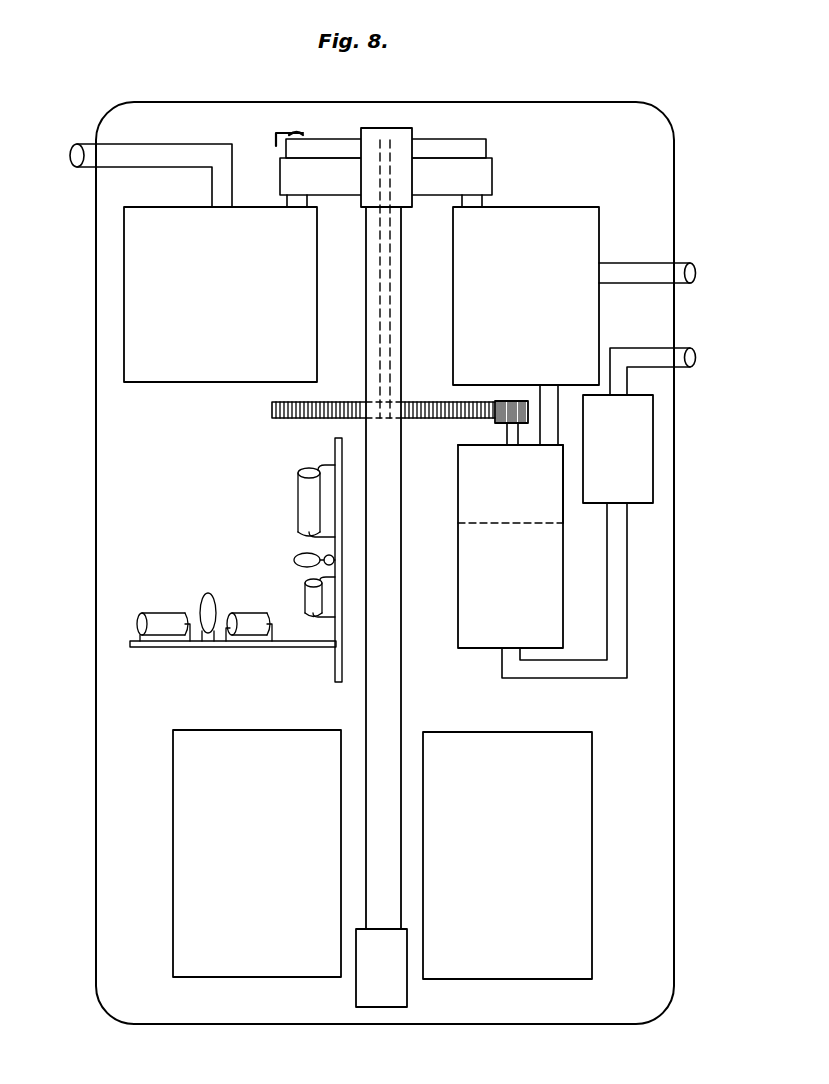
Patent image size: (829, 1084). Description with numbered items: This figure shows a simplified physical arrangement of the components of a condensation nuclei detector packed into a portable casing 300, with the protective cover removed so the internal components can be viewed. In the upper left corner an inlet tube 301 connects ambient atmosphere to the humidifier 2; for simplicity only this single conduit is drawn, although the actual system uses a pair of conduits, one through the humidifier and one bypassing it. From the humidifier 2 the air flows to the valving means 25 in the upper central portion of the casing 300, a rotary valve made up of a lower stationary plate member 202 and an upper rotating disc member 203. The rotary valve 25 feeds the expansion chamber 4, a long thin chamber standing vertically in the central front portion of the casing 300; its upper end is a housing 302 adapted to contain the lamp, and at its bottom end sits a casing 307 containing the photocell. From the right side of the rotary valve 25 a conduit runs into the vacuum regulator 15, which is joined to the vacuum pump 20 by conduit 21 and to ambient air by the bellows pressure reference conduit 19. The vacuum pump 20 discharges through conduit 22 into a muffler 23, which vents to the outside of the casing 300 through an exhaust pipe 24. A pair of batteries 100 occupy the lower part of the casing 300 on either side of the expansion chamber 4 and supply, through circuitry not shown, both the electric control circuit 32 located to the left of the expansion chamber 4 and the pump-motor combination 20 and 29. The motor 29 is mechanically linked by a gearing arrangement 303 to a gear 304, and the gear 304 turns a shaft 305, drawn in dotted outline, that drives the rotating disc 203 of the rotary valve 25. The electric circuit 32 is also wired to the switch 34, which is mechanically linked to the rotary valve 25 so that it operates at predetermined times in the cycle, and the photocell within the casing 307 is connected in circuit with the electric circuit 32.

The casing 300 is at (722, 167).
The inlet tube 301 is at (84, 165).
The humidifier 2 is at (132, 286).
The upper rotating disc member 203 is at (486, 147).
The lower stationary plate member 202 is at (493, 172).
The valving means 25 is at (281, 183).
The switch 34 is at (325, 132).
The housing 302 is at (398, 131).
The expansion chamber 4 is at (402, 257).
The shaft 305 is at (384, 311).
The gear 304 is at (345, 391).
The gearing arrangement 303 is at (500, 424).
The vacuum regulator 15 is at (572, 207).
The bellows pressure reference conduit 19 is at (678, 266).
The exhaust pipe 24 is at (684, 351).
The muffler 23 is at (654, 430).
The conduit 21 is at (550, 403).
The motor 29 is at (470, 482).
The vacuum pump 20 is at (465, 577).
The conduit 22 is at (581, 669).
The electric control circuit 32 is at (235, 648).
The batteries 100 is at (178, 850).
The casing 307 is at (390, 995).